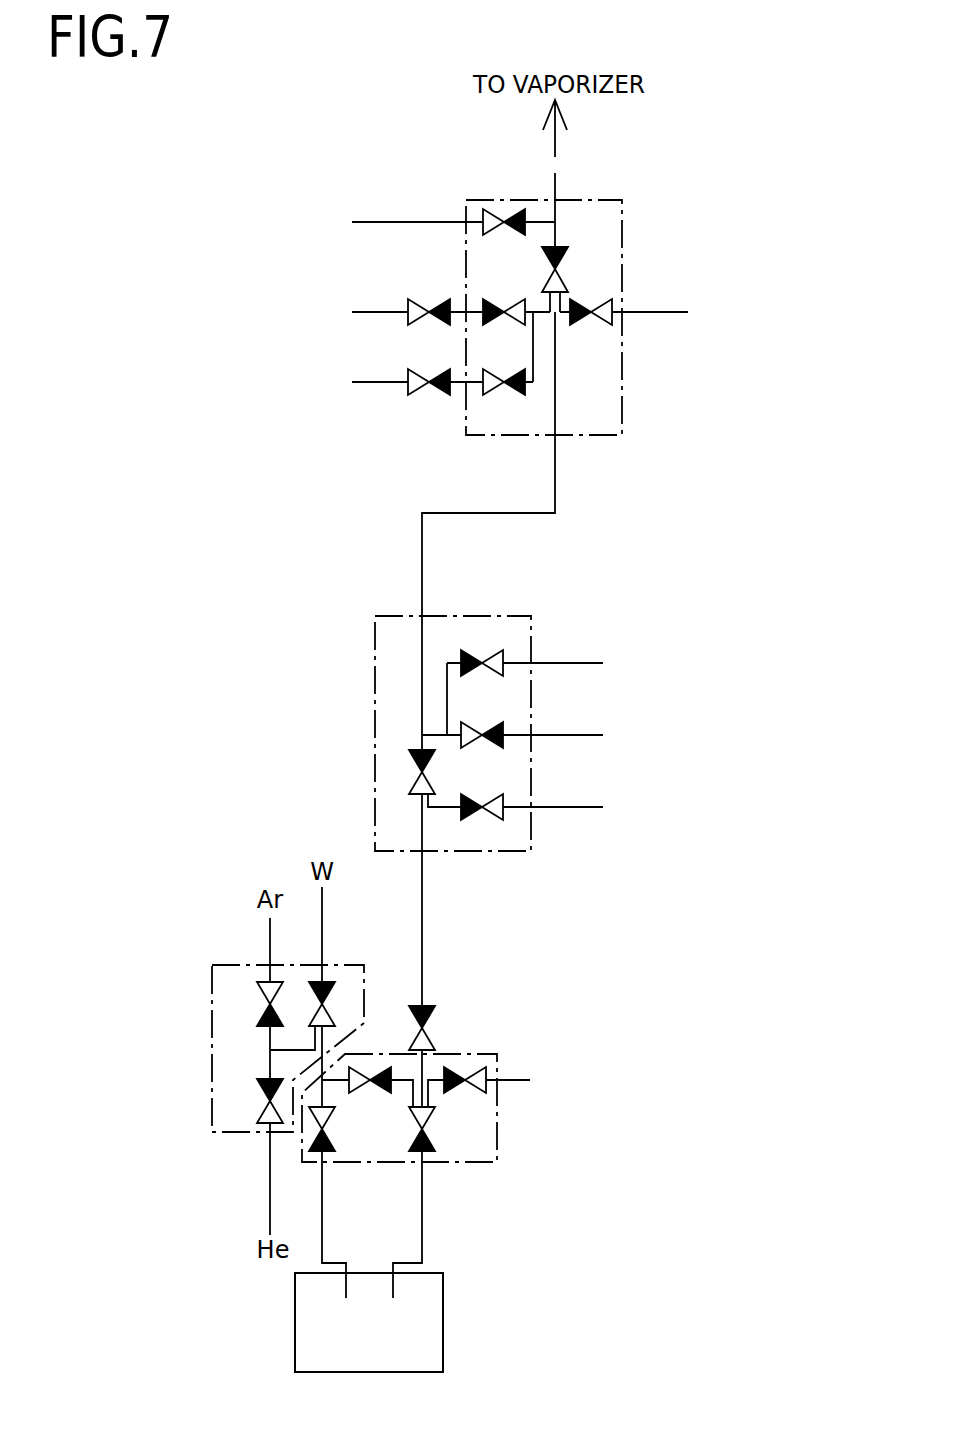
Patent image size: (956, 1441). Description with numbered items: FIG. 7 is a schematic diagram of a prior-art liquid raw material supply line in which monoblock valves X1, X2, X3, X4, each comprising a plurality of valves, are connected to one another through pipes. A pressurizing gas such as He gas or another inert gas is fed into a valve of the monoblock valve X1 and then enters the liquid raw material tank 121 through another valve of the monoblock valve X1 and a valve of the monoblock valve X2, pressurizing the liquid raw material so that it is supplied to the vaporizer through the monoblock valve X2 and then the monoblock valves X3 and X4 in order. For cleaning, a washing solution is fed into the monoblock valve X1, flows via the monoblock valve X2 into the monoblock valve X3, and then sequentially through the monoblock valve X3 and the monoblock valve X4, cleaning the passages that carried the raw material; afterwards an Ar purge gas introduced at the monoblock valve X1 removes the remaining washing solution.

The monoblock valve X1 is at (200, 1087).
The monoblock valve X2 is at (487, 1045).
The monoblock valve X3 is at (566, 629).
The monoblock valve X4 is at (648, 227).
The liquid raw material tank 121 is at (443, 1313).